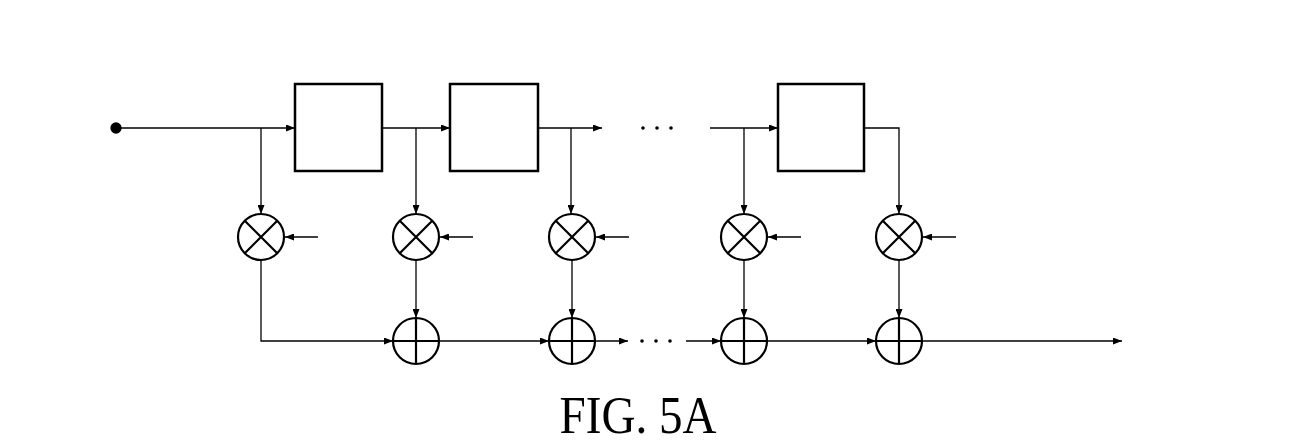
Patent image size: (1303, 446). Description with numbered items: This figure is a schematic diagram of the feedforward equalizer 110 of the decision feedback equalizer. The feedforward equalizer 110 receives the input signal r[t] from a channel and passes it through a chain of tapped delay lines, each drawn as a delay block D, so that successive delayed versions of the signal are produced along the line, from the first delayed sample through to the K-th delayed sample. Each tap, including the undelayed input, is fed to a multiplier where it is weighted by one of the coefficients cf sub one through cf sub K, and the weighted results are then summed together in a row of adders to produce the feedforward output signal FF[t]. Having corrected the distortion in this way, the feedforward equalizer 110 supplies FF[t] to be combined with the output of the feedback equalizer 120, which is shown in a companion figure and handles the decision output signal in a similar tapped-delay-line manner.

The feedforward equalizer 110 is at (1137, 56).
The feedback equalizer 120 is at (1186, 440).